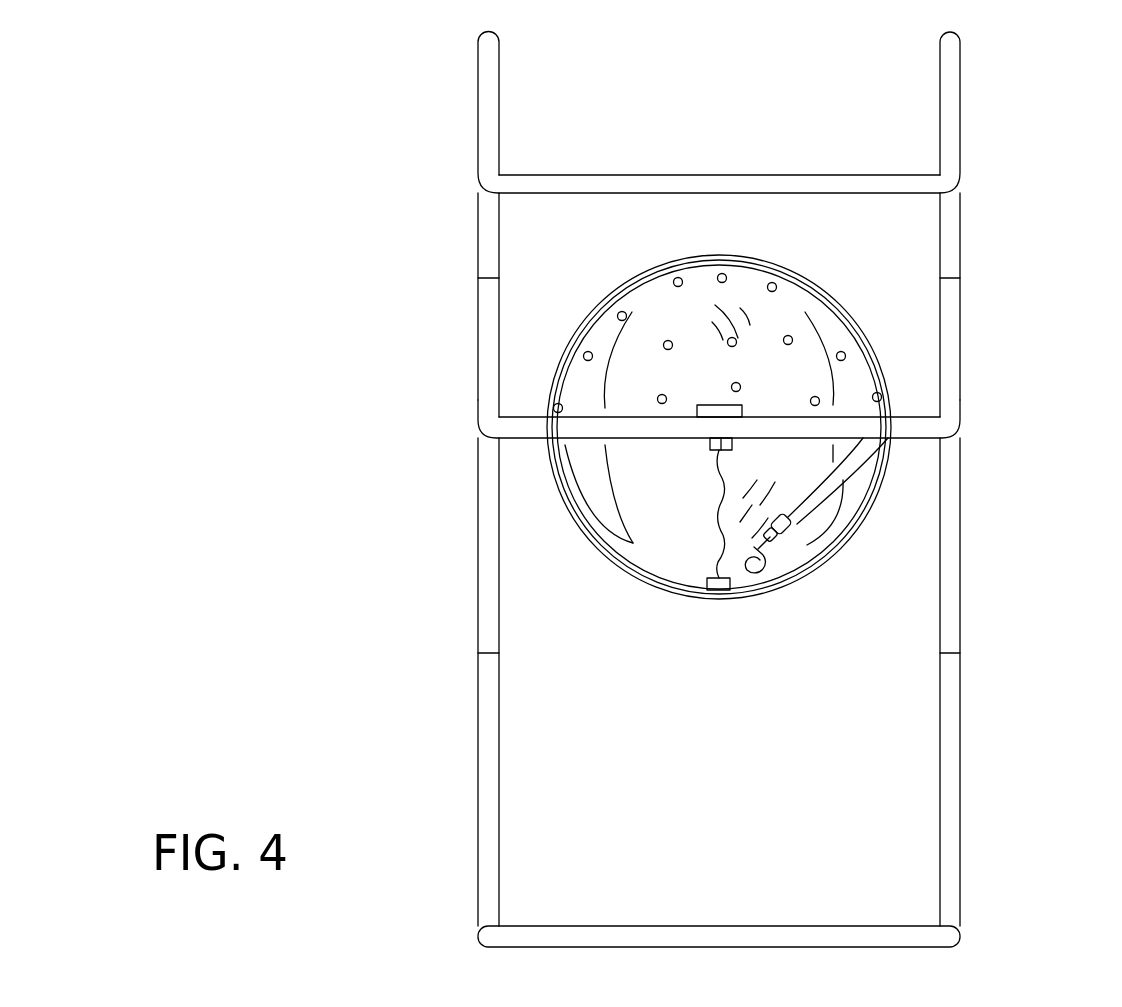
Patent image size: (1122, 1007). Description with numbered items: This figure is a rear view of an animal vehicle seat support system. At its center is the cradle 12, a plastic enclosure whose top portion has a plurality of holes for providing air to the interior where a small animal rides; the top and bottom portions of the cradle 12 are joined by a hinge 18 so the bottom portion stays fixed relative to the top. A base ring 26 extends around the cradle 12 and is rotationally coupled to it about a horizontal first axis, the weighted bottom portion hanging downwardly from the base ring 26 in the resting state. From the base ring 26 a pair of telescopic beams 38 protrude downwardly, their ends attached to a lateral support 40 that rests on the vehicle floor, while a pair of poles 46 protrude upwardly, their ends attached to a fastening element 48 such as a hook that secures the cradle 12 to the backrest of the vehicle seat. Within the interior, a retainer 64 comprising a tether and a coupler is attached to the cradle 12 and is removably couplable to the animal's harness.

The cradle 12 is at (658, 560).
The hinge 18 is at (742, 405).
The base ring 26 is at (917, 420).
The beams 38 is at (955, 698).
The lateral support 40 is at (912, 935).
The poles 46 is at (952, 277).
The fastening element 48 is at (955, 97).
The retainer 64 is at (798, 512).